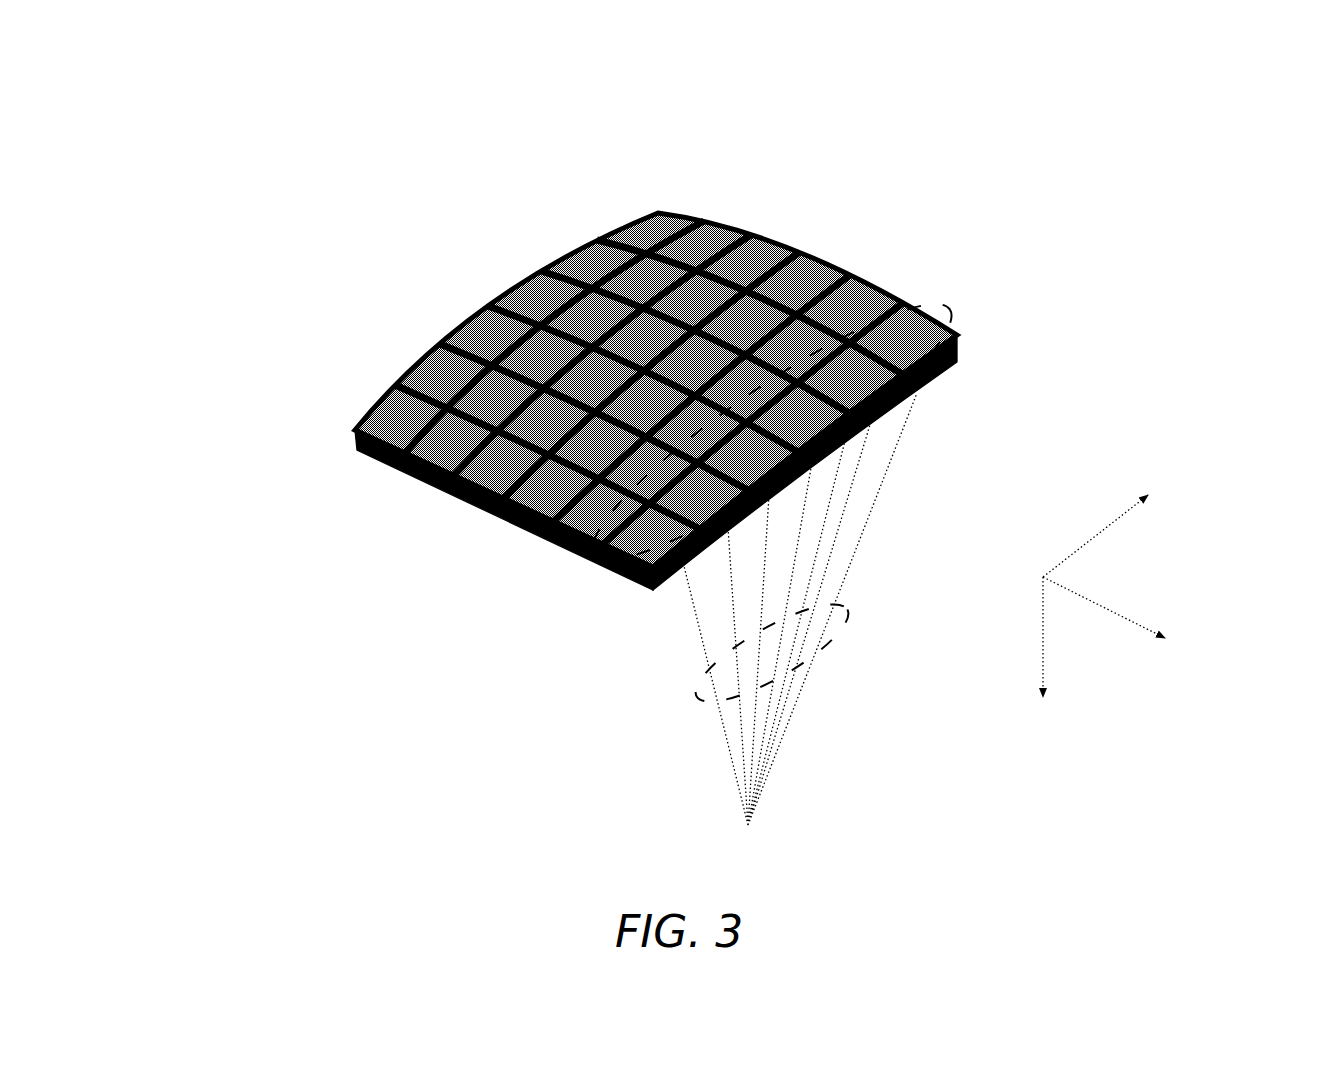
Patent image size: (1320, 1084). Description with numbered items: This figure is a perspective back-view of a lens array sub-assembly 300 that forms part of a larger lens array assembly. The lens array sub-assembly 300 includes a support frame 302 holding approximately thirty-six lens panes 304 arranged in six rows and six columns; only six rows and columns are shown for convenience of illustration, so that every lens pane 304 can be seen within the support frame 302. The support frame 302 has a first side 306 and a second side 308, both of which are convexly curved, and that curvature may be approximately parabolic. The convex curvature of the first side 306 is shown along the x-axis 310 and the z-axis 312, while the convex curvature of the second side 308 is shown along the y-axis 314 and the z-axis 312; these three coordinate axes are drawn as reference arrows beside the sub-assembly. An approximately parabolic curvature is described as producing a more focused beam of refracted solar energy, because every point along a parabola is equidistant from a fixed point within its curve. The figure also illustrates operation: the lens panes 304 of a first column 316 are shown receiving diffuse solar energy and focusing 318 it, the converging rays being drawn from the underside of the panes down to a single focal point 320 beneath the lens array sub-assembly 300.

The lens array sub-assembly 300 is at (1112, 150).
The support frame 302 is at (353, 433).
The lens panes 304 is at (473, 307).
The first side 306 is at (398, 466).
The second side 308 is at (960, 362).
The x-axis 310 is at (1135, 627).
The z-axis 312 is at (1035, 655).
The y-axis 314 is at (1139, 518).
The first column 316 is at (963, 311).
The focusing 318 is at (697, 697).
The focal point 320 is at (750, 828).